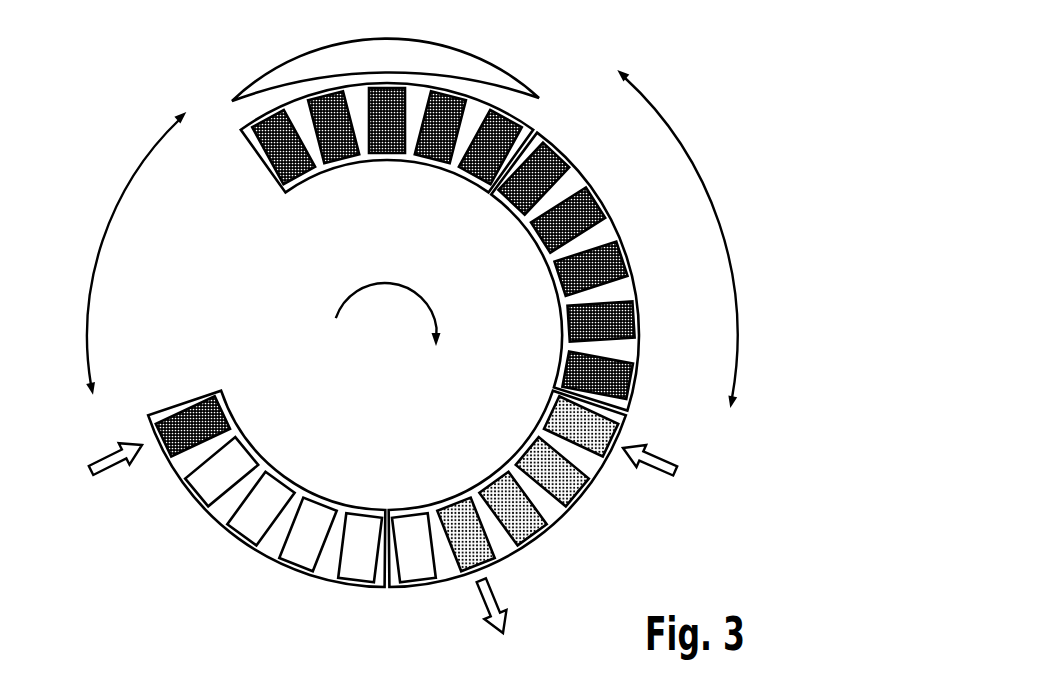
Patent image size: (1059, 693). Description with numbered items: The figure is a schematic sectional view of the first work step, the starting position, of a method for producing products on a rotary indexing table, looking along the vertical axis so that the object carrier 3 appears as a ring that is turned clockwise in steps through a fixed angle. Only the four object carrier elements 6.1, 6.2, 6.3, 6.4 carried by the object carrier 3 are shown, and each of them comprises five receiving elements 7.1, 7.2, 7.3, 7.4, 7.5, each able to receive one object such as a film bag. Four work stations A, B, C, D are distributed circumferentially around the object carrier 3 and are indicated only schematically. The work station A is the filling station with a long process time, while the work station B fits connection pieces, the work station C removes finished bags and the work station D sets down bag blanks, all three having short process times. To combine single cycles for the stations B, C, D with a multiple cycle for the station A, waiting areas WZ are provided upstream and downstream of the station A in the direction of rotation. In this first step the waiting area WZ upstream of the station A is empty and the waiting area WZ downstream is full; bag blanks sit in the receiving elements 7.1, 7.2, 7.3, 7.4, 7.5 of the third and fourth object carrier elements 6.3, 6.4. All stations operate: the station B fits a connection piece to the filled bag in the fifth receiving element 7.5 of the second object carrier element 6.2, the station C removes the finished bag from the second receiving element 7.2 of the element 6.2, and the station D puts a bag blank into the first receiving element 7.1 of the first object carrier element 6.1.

The object carrier 3 is at (525, 292).
The first object carrier element 6.1 is at (314, 471).
The second object carrier element 6.2 is at (490, 451).
The third object carrier element 6.3 is at (651, 281).
The fourth object carrier element 6.4 is at (385, 176).
The first receiving element 7.1 is at (468, 170).
The second receiving element 7.2 is at (438, 140).
The third receiving element 7.3 is at (390, 100).
The fourth receiving element 7.4 is at (335, 136).
The fifth receiving element 7.5 is at (294, 150).
The filling station A is at (385, 50).
The work station for fitting connection pieces B is at (662, 468).
The work station for removing bags C is at (494, 623).
The work station for setting down bag blanks D is at (106, 466).
The waiting area WZ is at (103, 228).